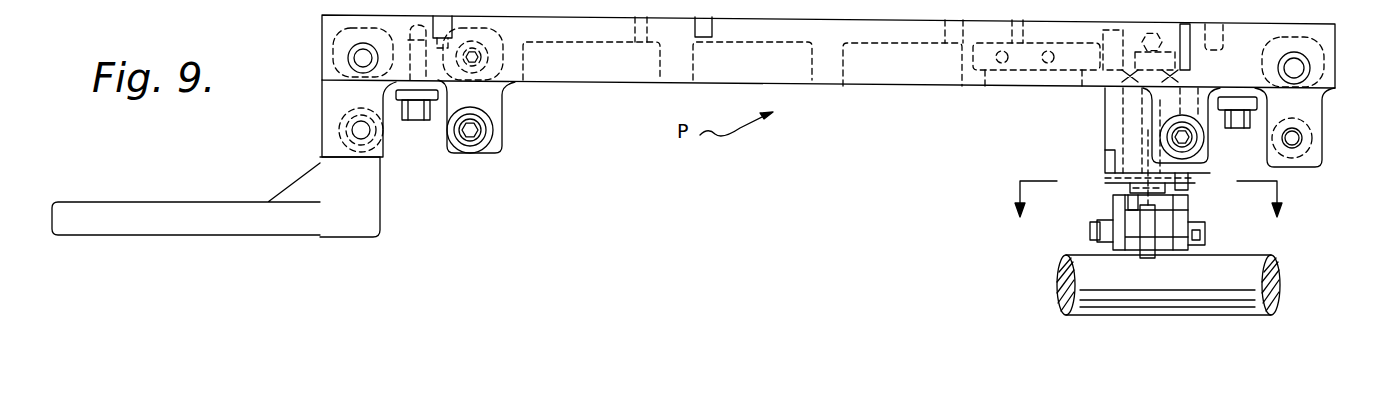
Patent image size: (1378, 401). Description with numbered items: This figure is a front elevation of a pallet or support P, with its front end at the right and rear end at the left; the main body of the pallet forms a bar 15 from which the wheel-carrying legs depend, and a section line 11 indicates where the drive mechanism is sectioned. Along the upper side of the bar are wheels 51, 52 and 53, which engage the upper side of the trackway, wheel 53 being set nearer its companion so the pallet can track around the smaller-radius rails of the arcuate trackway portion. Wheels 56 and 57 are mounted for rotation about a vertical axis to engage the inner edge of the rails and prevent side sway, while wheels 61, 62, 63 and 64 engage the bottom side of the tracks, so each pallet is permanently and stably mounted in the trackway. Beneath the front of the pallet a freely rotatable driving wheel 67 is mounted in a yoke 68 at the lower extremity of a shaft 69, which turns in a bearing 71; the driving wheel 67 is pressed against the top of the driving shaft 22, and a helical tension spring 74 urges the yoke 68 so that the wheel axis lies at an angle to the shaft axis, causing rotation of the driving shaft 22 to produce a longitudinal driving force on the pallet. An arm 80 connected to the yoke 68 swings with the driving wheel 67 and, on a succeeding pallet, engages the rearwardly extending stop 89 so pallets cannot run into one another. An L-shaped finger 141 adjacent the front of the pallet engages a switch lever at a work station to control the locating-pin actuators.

The support bar 15 is at (828, 44).
The stop 89 is at (143, 238).
The wheel 52 is at (356, 81).
The wheel 63 is at (342, 140).
The wheel 57 is at (405, 101).
The wheel 53 is at (487, 83).
The wheel 62 is at (492, 143).
The L-shaped finger 141 is at (1006, 72).
The bearing 71 is at (1125, 90).
The shaft 69 is at (1150, 103).
The wheel 61 is at (1204, 165).
The wheel 56 is at (1243, 111).
The wheel 51 is at (1318, 101).
The wheel 64 is at (1308, 167).
The helical tension spring 74 is at (1142, 187).
The yoke 68 is at (1128, 215).
The driving wheel 67 is at (1162, 226).
The arm 80 is at (1190, 251).
The driving shaft 22 is at (1075, 275).
The section line 11 is at (1153, 219).